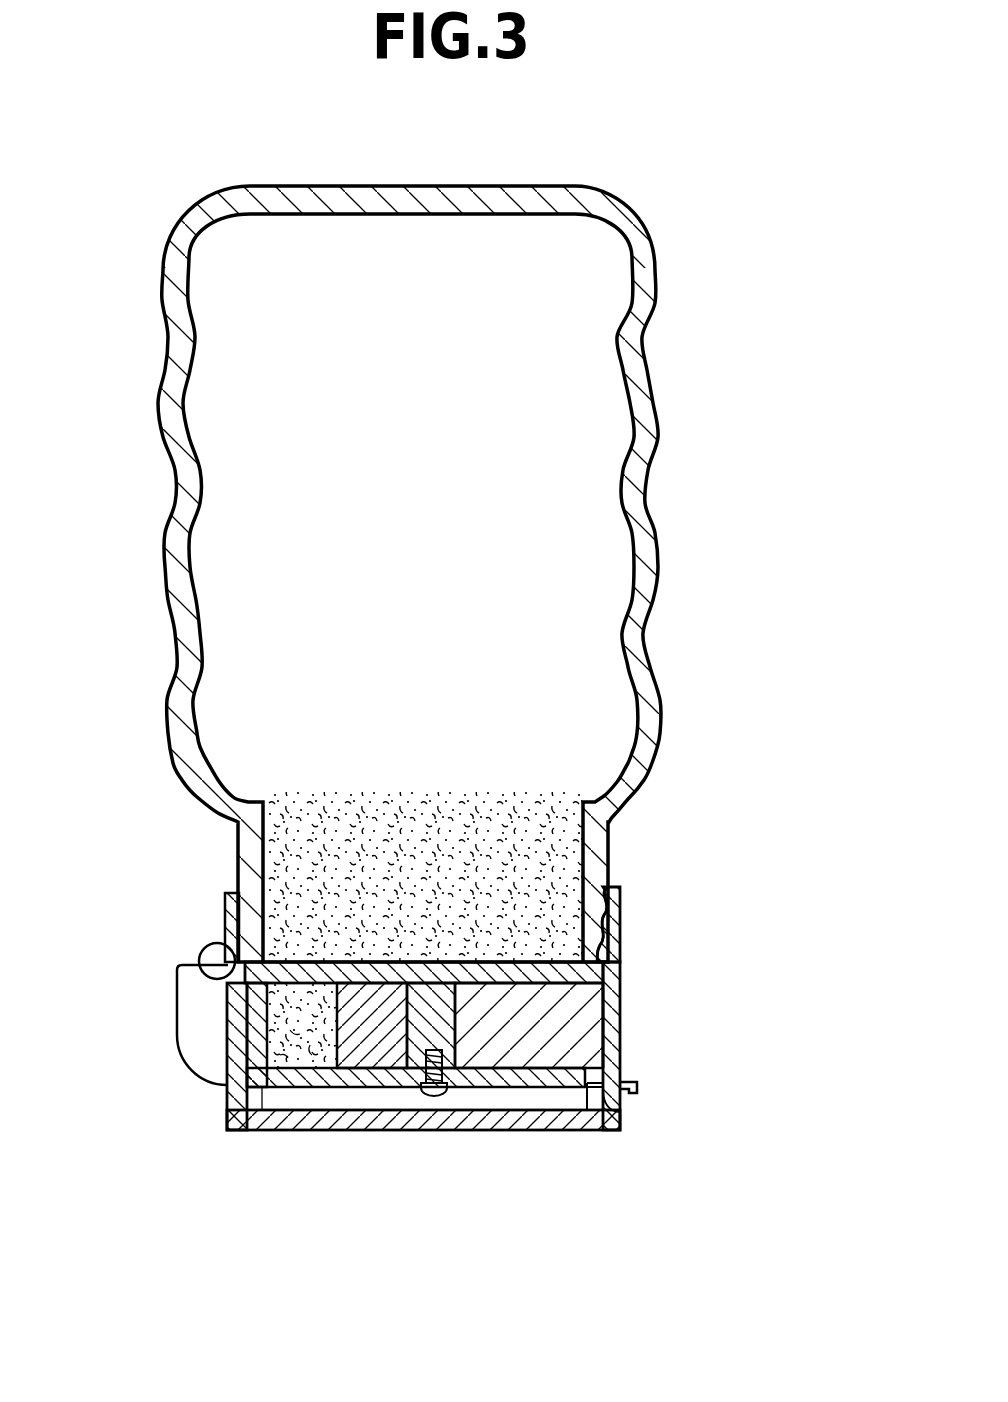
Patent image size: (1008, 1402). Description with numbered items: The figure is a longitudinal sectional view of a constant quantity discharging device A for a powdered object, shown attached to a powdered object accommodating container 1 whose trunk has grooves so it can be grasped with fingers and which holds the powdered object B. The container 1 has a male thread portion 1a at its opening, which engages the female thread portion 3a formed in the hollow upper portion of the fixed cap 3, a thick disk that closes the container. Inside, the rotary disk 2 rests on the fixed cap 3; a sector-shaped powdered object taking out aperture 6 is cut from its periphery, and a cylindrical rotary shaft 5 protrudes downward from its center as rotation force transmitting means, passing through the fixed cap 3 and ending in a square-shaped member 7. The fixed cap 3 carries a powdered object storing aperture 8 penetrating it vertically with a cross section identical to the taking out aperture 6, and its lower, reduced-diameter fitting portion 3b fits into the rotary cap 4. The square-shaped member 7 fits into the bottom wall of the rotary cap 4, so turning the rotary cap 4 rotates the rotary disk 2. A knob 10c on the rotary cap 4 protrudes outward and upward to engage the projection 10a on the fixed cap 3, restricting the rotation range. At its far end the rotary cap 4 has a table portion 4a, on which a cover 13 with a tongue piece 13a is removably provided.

The powdered object accommodating container 1 is at (643, 370).
The male thread portion 1a is at (618, 886).
The powdered object B is at (512, 845).
The rotary disk 2 is at (527, 957).
The fixed cap 3 is at (618, 952).
The female thread portion 3a is at (620, 926).
The fitting portion 3b is at (604, 1037).
The rotary cap 4 is at (622, 1008).
The table portion 4a is at (607, 1085).
The cylindrical rotary shaft 5 is at (405, 1032).
The powdered object taking out aperture 6 is at (303, 965).
The square-shaped member 7 is at (450, 1073).
The powdered object storing aperture 8 is at (297, 1047).
The projection 10a is at (199, 946).
The knob 10c is at (188, 1072).
The cover 13 is at (614, 1122).
The tongue piece 13a is at (639, 1086).
The constant quantity discharging device A is at (778, 1125).